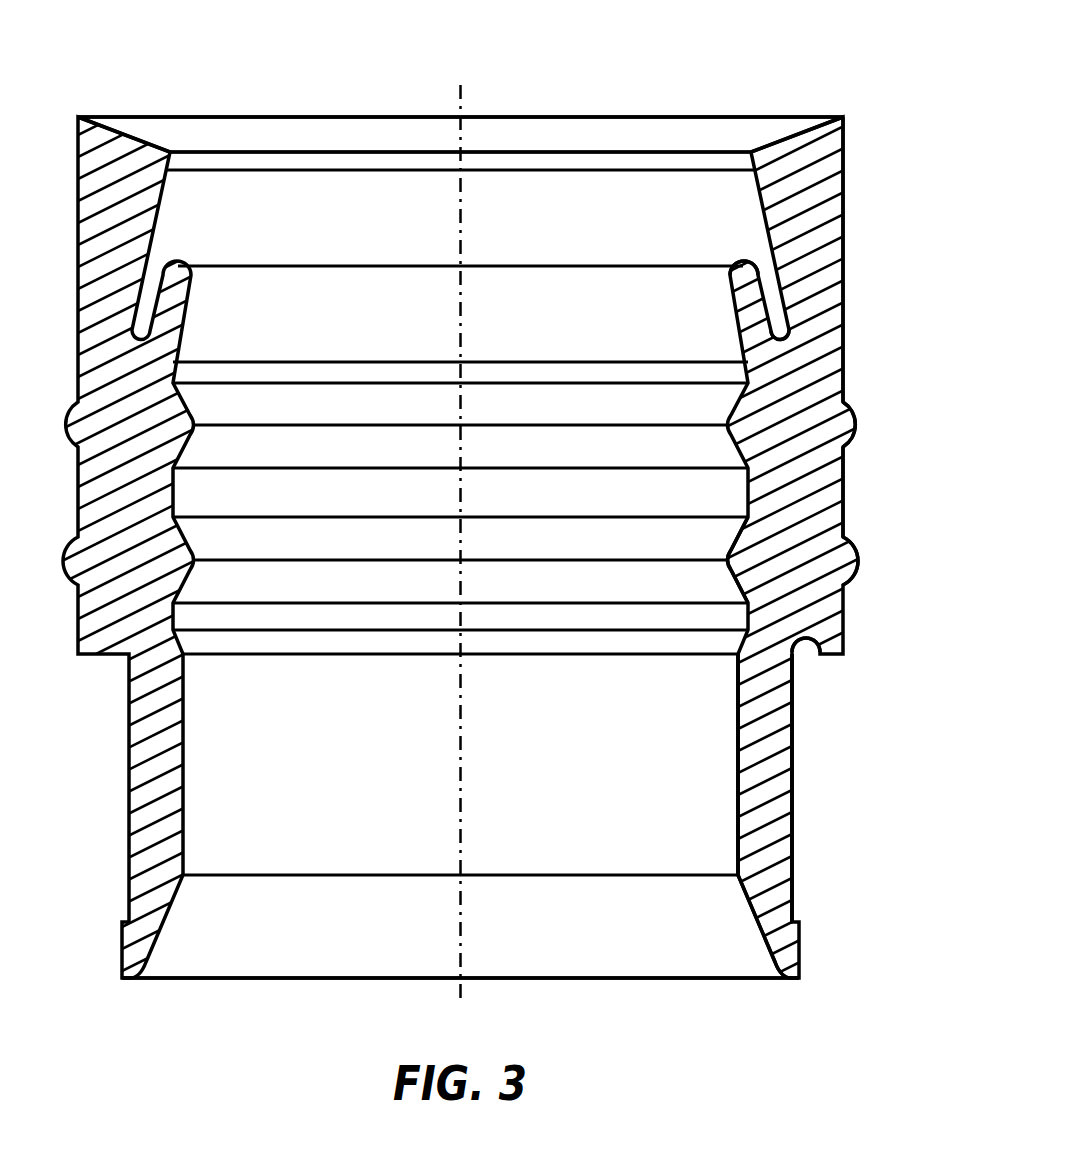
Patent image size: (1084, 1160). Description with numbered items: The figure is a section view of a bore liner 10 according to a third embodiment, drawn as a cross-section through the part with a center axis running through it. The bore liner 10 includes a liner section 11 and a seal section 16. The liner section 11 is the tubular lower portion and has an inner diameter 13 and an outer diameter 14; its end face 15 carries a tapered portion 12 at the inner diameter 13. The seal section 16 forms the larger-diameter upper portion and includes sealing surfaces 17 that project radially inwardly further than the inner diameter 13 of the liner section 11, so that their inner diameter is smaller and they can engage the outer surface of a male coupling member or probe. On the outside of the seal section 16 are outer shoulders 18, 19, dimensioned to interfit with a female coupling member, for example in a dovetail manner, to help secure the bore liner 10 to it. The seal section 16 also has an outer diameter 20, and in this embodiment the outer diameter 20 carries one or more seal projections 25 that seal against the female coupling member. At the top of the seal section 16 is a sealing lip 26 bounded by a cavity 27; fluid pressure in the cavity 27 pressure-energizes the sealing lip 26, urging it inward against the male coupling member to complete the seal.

The bore liner 10 is at (740, 47).
The liner section 11 is at (777, 817).
The tapered portion 12 is at (748, 920).
The inner diameter 13 is at (735, 760).
The outer diameter 14 is at (792, 756).
The end face 15 is at (792, 980).
The seal section 16 is at (823, 373).
The sealing surfaces 17 is at (730, 563).
The outer shoulder 18 is at (807, 122).
The outer shoulder 19 is at (817, 657).
The outer diameter 20 is at (846, 493).
The seal projections 25 is at (855, 425).
The sealing lip 26 is at (738, 300).
The cavity 27 is at (780, 325).